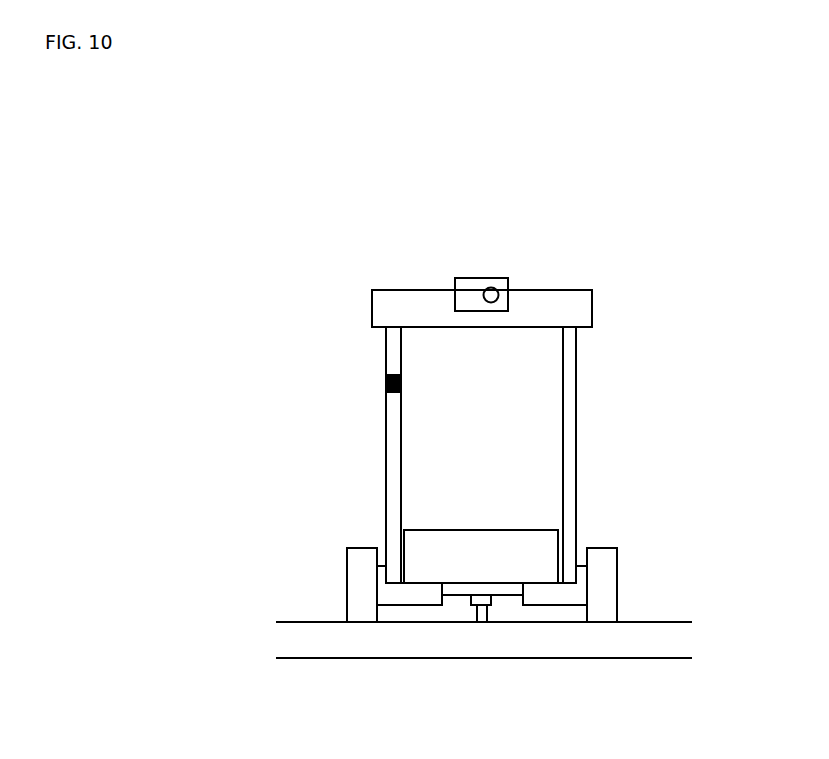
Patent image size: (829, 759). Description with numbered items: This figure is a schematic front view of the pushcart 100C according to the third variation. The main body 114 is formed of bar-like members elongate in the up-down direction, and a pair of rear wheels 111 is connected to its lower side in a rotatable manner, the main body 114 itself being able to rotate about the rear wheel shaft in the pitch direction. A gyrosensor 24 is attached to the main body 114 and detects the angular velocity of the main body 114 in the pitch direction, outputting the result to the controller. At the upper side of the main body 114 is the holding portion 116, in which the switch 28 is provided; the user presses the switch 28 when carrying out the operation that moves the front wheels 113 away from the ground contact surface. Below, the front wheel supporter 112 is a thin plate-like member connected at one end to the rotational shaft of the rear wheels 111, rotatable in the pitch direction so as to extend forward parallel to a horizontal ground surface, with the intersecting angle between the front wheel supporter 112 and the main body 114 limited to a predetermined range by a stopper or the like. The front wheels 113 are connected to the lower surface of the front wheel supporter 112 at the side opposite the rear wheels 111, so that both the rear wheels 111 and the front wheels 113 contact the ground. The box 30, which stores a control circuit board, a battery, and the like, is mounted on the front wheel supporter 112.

The pushcart 100C is at (665, 256).
The rear wheels 111 is at (347, 585).
The front wheel supporter 112 is at (446, 596).
The front wheels 113 is at (483, 622).
The main body 114 is at (386, 488).
The holding portion 116 is at (592, 305).
The gyrosensor 24 is at (386, 382).
The switch 28 is at (491, 287).
The box 30 is at (543, 550).